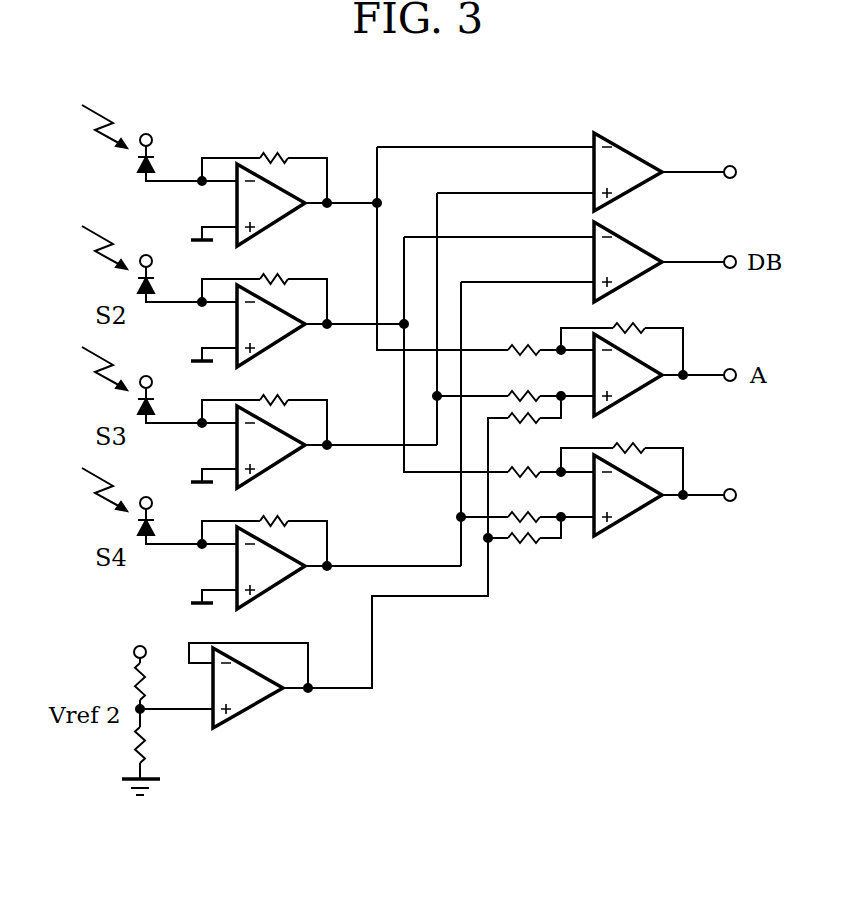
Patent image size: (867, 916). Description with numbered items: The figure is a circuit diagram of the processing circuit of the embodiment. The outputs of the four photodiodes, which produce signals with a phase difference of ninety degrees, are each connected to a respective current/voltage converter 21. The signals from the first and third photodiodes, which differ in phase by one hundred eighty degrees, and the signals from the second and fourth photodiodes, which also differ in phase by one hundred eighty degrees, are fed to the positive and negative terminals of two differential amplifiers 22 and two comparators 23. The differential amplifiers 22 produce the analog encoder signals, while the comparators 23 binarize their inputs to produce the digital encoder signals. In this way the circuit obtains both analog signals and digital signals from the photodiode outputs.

The current/voltage converter 21 is at (206, 174).
The differential amplifier 22 is at (664, 494).
The comparator 23 is at (688, 170).